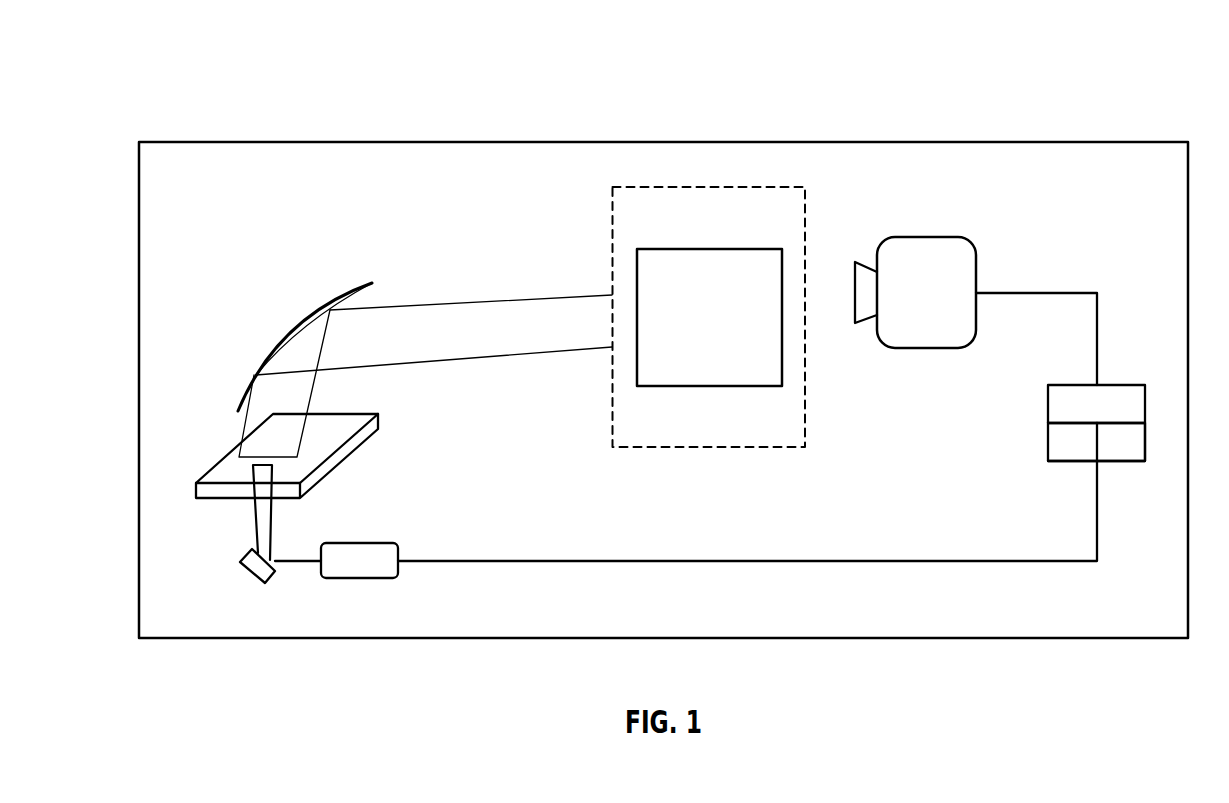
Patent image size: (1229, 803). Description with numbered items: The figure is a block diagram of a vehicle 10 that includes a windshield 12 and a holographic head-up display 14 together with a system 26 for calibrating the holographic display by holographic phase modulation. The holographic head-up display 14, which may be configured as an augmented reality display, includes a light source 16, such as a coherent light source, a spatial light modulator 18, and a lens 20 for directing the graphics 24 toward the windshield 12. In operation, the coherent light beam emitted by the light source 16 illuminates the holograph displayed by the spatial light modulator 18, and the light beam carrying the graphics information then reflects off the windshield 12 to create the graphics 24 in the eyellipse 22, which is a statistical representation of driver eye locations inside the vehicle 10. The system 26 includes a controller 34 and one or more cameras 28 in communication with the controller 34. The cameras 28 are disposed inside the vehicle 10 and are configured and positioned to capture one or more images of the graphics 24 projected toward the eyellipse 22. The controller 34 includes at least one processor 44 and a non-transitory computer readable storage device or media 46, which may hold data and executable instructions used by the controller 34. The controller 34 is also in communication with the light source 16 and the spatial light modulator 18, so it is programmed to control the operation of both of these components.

The vehicle 10 is at (1124, 72).
The windshield 12 is at (349, 293).
The holographic head-up display 14 is at (244, 524).
The light source 16 is at (358, 543).
The spatial light modulator 18 is at (255, 577).
The lens 20 is at (370, 432).
The eyellipse 22 is at (807, 217).
The graphics 24 is at (782, 369).
The system for calibrating the holographic display 26 is at (1000, 320).
The camera 28 is at (925, 237).
The controller 34 is at (1096, 423).
The processor 44 is at (1072, 442).
The non-transitory computer readable storage device or media 46 is at (1121, 442).